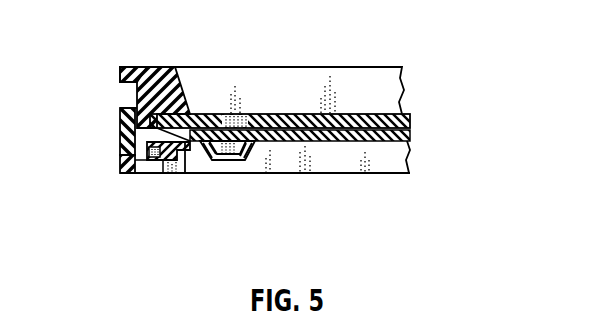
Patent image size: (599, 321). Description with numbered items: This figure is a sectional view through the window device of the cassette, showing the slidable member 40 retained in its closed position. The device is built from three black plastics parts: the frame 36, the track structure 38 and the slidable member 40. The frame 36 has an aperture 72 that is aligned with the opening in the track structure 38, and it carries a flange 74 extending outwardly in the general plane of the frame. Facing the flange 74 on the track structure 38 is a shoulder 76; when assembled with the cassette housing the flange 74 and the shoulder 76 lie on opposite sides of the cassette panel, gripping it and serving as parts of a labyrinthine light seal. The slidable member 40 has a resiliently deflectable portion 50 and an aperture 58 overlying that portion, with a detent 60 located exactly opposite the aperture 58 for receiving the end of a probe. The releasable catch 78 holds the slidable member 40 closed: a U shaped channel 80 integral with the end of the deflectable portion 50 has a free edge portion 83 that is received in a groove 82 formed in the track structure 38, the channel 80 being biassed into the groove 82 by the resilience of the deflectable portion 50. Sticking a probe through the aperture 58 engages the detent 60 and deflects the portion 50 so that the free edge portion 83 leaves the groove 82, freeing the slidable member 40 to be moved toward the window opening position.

The frame 36 is at (160, 70).
The track structure 38 is at (122, 135).
The slidable member 40 is at (292, 113).
The deflectable portion 50 is at (300, 141).
The aperture 58 is at (237, 115).
The detent 60 is at (237, 160).
The aperture 72 is at (372, 95).
The flange 74 is at (123, 73).
The shoulder 76 is at (133, 108).
The releasable catch 78 is at (170, 178).
The U shaped channel 80 is at (178, 163).
The groove 82 is at (122, 170).
The free edge portion 83 is at (155, 160).